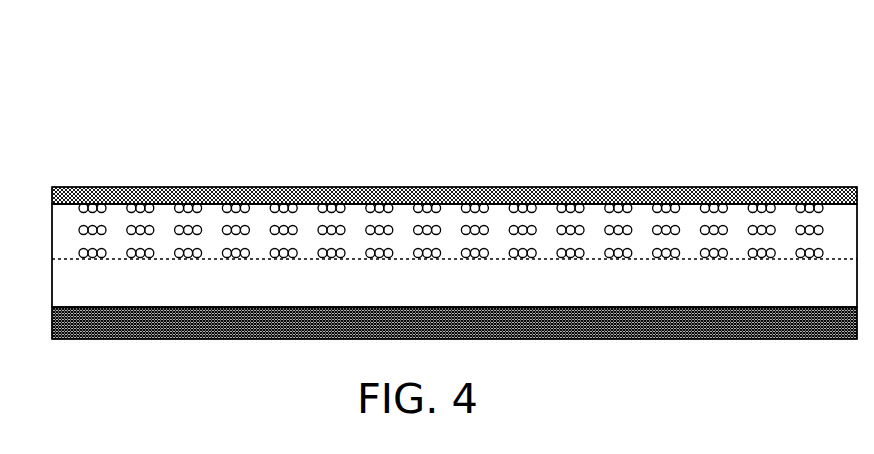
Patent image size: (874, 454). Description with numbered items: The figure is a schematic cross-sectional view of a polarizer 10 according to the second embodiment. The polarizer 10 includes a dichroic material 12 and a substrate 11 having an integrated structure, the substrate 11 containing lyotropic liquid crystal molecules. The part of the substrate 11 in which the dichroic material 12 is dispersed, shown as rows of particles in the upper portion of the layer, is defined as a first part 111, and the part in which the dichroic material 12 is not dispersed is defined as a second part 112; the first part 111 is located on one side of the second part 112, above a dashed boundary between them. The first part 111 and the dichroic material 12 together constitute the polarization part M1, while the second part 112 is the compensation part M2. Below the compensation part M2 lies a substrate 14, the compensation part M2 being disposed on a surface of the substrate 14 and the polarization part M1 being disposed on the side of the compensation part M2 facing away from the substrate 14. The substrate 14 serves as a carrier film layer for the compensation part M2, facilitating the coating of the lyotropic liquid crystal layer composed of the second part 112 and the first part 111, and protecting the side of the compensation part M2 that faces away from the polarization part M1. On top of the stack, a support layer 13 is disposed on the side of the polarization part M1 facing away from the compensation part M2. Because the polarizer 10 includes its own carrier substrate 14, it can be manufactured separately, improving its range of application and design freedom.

The polarizer 10 is at (367, 71).
The substrate 11 is at (510, 117).
The dichroic material 12 is at (280, 208).
The support layer 13 is at (727, 202).
The substrate 14 is at (817, 322).
The first part 111 is at (214, 228).
The second part 112 is at (643, 278).
The polarization part M1 is at (213, 140).
The compensation part M2 is at (127, 277).